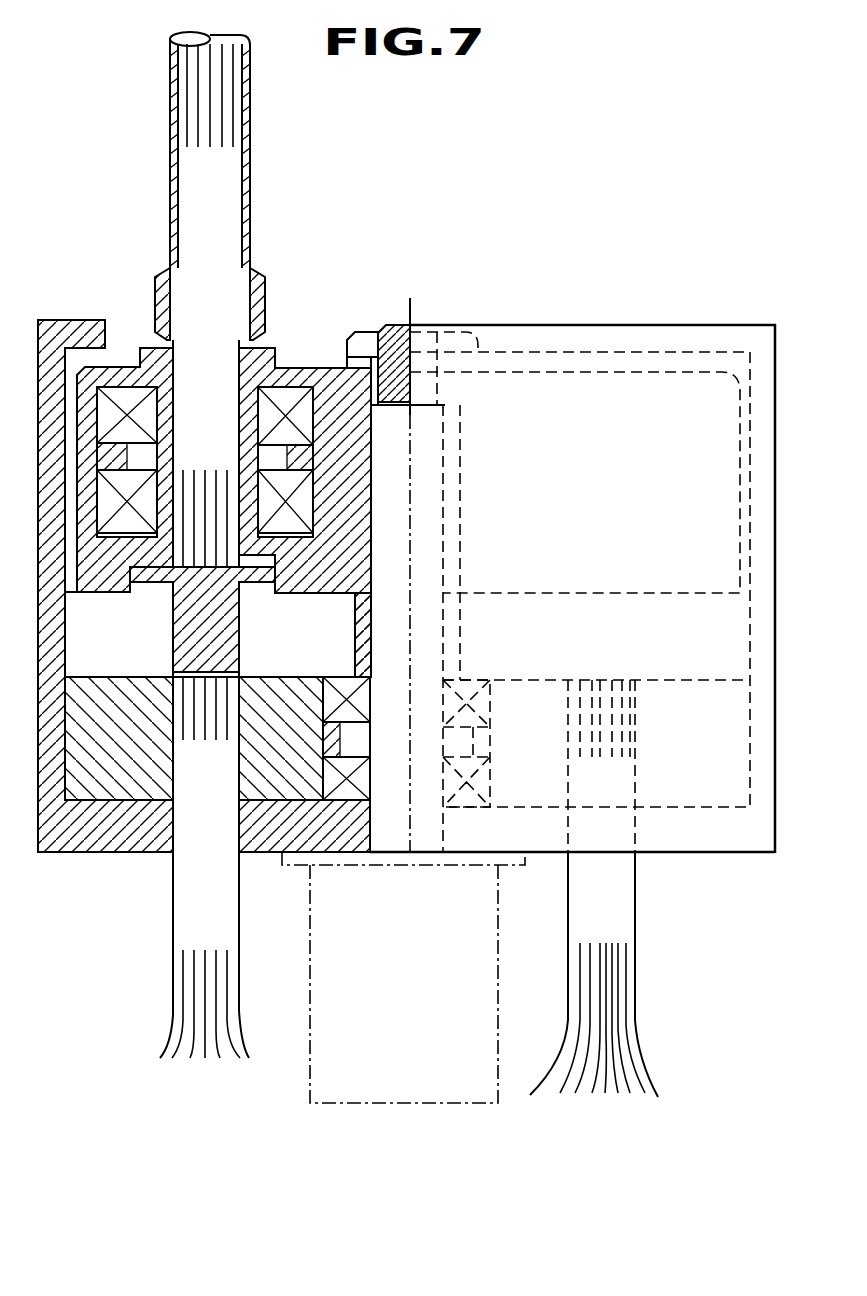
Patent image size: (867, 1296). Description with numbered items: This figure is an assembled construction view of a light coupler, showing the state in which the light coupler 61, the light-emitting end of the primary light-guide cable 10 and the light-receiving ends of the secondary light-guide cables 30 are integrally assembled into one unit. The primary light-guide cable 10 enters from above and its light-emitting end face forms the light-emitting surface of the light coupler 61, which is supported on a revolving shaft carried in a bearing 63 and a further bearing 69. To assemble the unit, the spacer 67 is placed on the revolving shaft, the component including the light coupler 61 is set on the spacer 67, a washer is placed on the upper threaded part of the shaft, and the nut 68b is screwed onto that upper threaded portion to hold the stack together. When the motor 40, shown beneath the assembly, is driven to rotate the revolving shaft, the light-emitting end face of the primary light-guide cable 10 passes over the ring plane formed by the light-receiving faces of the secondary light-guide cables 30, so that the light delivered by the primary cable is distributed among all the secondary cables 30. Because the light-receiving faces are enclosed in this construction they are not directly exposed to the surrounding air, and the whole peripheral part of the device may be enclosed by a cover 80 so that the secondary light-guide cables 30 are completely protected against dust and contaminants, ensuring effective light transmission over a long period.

The primary light-guide cable 10 is at (232, 186).
The nut 68b is at (363, 335).
The bearing 63 is at (290, 395).
The light coupler 61 is at (172, 627).
The spacer 67 is at (358, 637).
The cover 80 is at (47, 823).
The bearing 69 is at (340, 795).
The secondary light-guide cables 30 is at (178, 918).
The motor 40 is at (295, 1072).